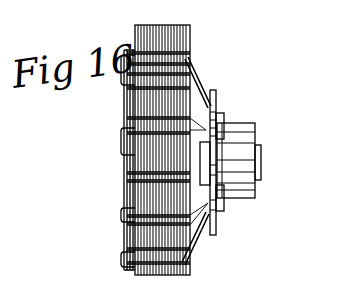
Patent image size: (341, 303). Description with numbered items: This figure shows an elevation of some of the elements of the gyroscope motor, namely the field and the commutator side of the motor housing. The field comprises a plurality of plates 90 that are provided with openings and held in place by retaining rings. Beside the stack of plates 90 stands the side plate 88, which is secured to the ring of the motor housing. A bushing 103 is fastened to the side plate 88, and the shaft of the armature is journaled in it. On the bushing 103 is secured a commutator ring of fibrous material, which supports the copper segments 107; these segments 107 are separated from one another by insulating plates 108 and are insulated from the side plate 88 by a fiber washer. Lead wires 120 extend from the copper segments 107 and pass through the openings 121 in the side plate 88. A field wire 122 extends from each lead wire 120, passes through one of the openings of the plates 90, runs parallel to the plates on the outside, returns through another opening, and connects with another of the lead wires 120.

The plates 90 is at (138, 28).
The field wire 122 is at (132, 152).
The lead wires 120 is at (200, 93).
The openings 121 is at (216, 220).
The side plate 88 is at (217, 96).
The bushing 103 is at (261, 149).
The copper segments 107 is at (248, 131).
The insulating plates 108 is at (248, 181).